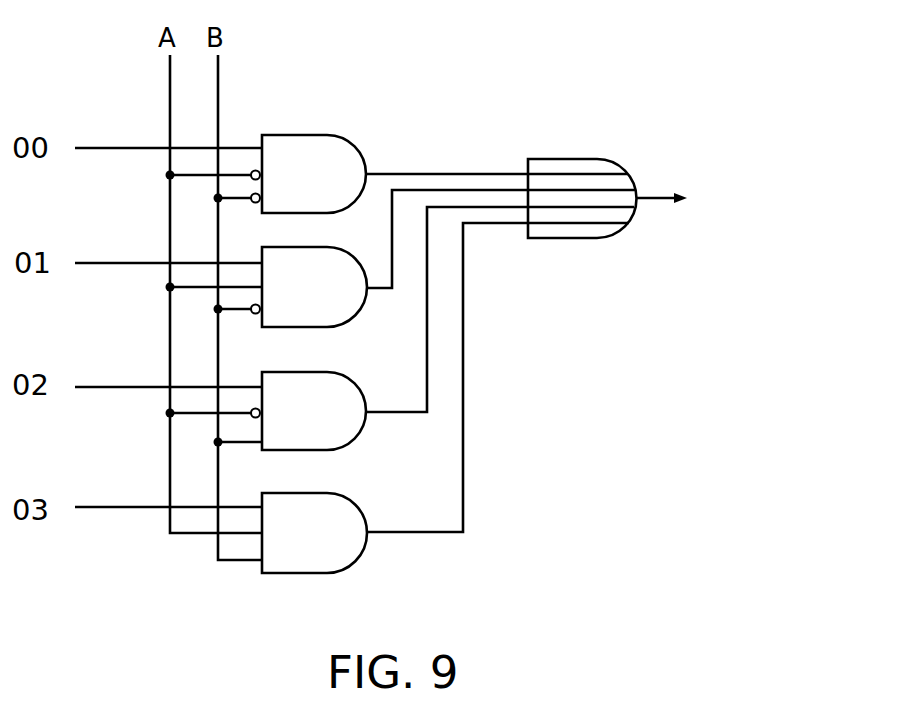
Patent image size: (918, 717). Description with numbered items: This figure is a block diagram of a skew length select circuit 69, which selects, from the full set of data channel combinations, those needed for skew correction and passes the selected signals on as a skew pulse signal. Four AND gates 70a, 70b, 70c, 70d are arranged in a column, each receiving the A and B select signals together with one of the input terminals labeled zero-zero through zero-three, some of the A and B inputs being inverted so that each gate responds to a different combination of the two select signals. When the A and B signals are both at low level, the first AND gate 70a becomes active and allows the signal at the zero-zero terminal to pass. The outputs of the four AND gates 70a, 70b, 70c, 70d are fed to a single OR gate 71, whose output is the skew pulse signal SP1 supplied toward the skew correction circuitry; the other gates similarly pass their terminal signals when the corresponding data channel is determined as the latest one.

The skew length select circuit 69 is at (413, 64).
The first AND gate 70a is at (353, 157).
The AND gate 70b is at (347, 310).
The AND gate 70c is at (352, 430).
The AND gate 70d is at (348, 555).
The OR gate 71 is at (588, 160).